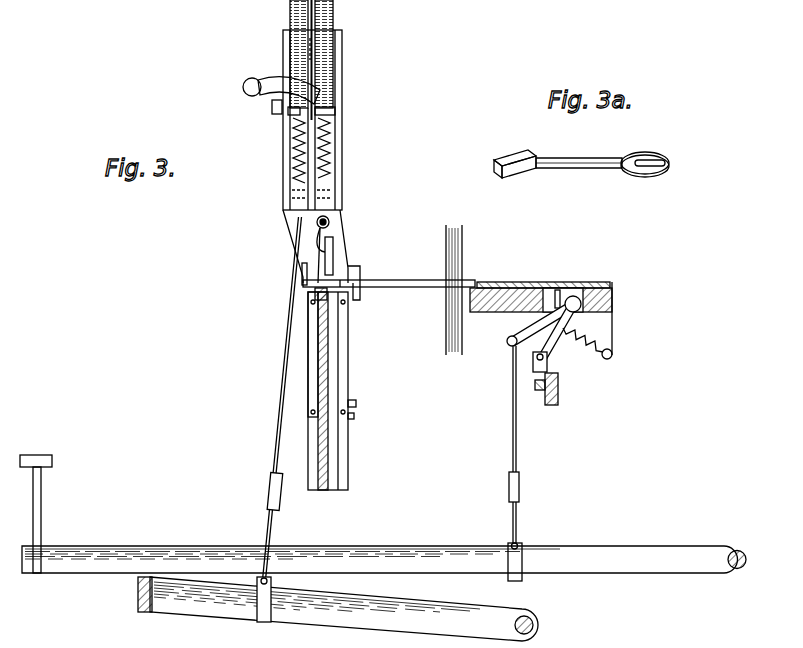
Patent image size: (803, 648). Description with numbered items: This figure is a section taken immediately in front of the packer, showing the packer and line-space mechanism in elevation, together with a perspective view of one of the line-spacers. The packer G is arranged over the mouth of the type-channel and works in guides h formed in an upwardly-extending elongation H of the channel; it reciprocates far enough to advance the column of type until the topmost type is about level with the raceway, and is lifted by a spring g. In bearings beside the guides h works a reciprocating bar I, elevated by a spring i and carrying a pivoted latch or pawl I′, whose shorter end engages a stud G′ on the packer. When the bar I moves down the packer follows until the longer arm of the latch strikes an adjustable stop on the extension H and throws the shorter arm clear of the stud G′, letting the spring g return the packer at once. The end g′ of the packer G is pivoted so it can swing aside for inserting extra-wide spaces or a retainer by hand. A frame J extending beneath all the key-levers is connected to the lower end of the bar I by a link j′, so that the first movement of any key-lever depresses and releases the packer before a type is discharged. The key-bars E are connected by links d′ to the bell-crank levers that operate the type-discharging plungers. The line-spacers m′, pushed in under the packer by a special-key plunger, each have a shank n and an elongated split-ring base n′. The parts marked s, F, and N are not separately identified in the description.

In FIG. 3, the reciprocating bar I is at (298, 60).
In FIG. 3, the guides h is at (318, 44).
In FIG. 3, the extension of the type-channel H is at (340, 72).
In FIG. 3, the latch or pawl I′ is at (268, 78).
In FIG. 3, the stud or projection G′ is at (332, 113).
In FIG. 3, the spring i is at (292, 150).
In FIG. 3, the spring g is at (334, 152).
In FIG. 3, the packer G is at (330, 221).
In FIG. 3, the pivoted end of the packer g′ is at (334, 254).
In FIG. 3, the wire s is at (320, 284).
In FIG. 3, the connecting rod j′ is at (278, 412).
In FIG. 3, the post F is at (340, 452).
In FIG. 3, the standard N is at (462, 235).
In FIG. 3, the link d′ is at (517, 450).
In FIG. 3, the key-bar E is at (425, 548).
In FIG. 3, the frame J is at (338, 609).
In FIG. 3A, the line-spacer m′ is at (528, 158).
In FIG. 3A, the shank n is at (572, 160).
In FIG. 3A, the elongated split-ring base n′ is at (648, 153).